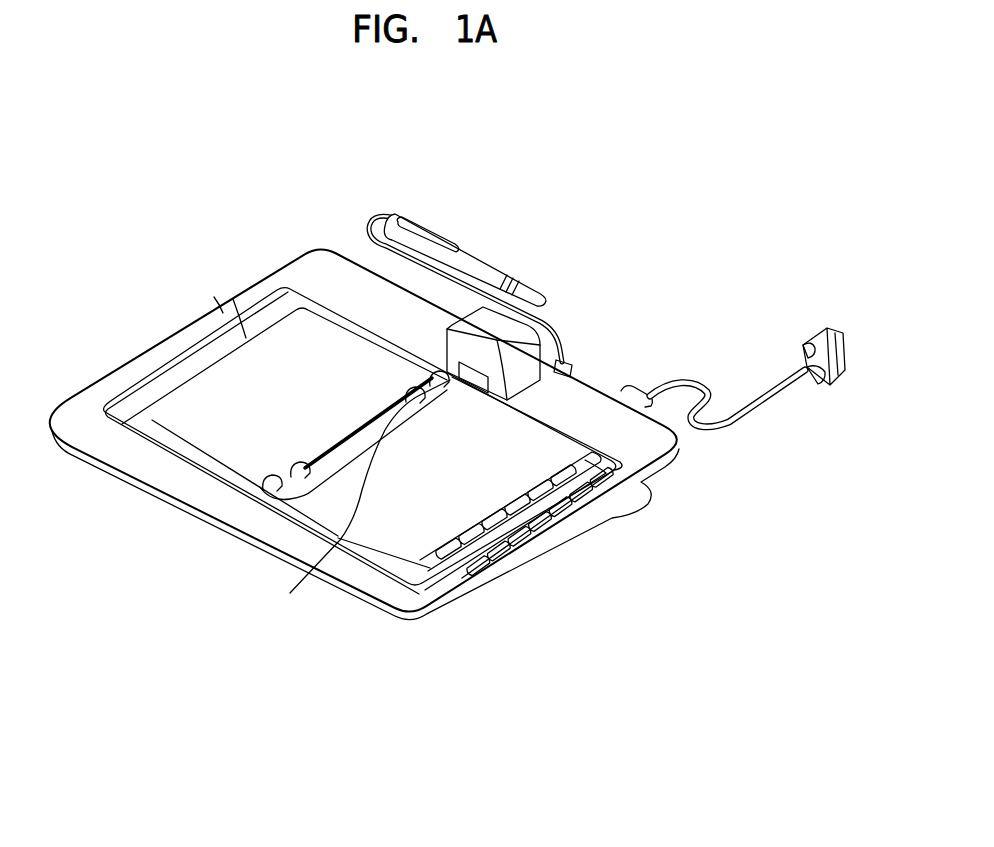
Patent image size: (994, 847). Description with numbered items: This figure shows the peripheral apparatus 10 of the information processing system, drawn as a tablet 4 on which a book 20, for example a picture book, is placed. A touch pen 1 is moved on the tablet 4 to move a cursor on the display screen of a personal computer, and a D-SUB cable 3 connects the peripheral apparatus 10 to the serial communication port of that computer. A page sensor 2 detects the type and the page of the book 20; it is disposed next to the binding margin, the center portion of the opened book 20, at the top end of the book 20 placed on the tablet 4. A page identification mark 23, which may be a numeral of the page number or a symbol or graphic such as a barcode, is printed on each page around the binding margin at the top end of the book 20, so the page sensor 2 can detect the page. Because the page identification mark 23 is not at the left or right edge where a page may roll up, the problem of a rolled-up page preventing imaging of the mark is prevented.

The peripheral apparatus 10 is at (580, 703).
The touch pen 1 is at (487, 260).
The page sensor 2 is at (510, 338).
The D-SUB cable 3 is at (793, 388).
The tablet 4 is at (243, 318).
The book 20 is at (167, 422).
The page identification mark 23 is at (469, 393).